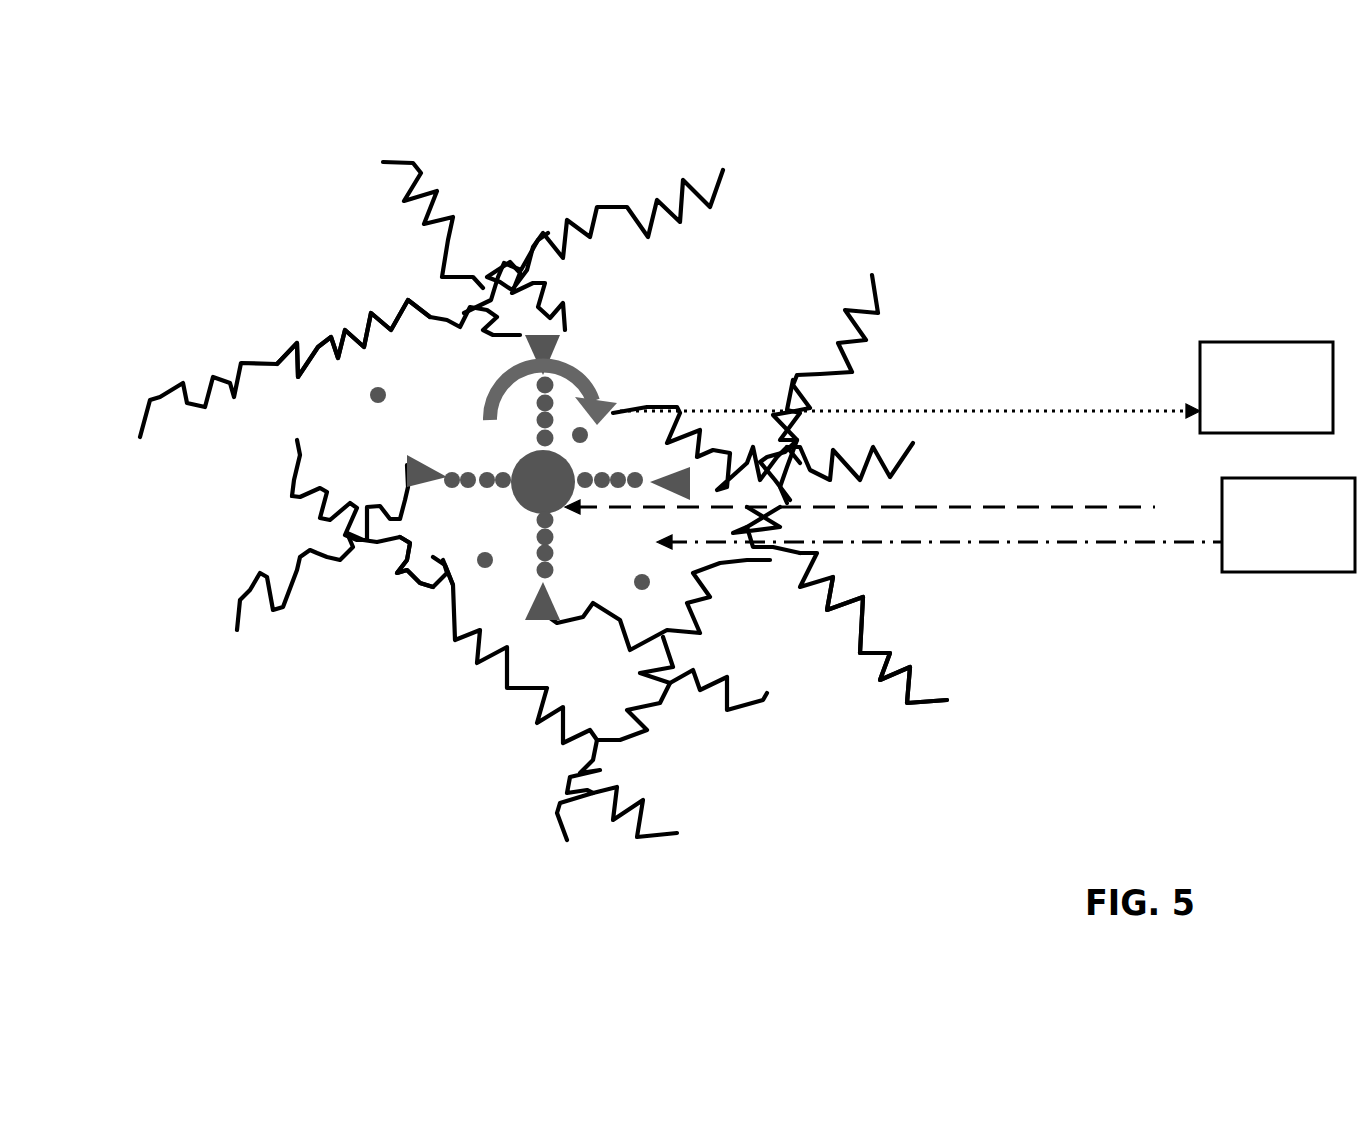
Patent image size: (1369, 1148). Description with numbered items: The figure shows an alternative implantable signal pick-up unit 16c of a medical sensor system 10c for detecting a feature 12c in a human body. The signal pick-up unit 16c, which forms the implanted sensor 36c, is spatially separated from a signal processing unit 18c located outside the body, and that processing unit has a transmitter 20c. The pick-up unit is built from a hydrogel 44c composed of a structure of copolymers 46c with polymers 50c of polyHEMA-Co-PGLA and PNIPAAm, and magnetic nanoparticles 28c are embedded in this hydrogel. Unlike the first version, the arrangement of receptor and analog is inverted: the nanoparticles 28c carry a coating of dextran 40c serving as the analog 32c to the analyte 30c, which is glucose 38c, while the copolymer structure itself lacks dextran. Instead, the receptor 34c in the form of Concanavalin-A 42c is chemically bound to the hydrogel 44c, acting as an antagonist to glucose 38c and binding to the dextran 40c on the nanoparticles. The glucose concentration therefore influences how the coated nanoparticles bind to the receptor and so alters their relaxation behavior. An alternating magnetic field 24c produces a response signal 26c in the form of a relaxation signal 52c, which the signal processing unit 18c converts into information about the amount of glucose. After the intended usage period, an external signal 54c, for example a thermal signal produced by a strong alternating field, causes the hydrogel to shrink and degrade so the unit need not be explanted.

The medical sensor system 10c is at (1078, 210).
The feature 12c is at (650, 587).
The signal pick-up unit 16c is at (395, 742).
The signal processing unit 18c is at (1297, 348).
The transmitter 20c is at (1297, 560).
The alternating magnetic field 24c is at (935, 505).
The response signal 26c is at (595, 405).
The nanoparticles 28c is at (527, 465).
The analyte 30c is at (483, 562).
The analog 32c is at (873, 628).
The receptor 34c is at (490, 480).
The sensor 36c is at (188, 663).
The glucose 38c is at (386, 602).
The dextran 40c is at (305, 338).
The Concanavalin-A 42c is at (903, 640).
The hydrogel 44c is at (290, 493).
The copolymers 46c is at (567, 333).
The polymers 50c is at (423, 223).
The relaxation signal 52c is at (1060, 410).
The external signal 54c is at (1027, 547).